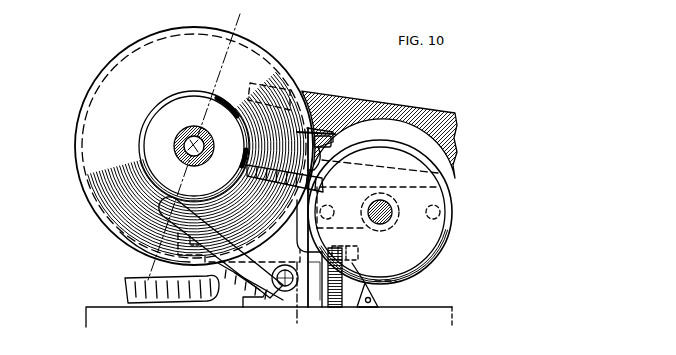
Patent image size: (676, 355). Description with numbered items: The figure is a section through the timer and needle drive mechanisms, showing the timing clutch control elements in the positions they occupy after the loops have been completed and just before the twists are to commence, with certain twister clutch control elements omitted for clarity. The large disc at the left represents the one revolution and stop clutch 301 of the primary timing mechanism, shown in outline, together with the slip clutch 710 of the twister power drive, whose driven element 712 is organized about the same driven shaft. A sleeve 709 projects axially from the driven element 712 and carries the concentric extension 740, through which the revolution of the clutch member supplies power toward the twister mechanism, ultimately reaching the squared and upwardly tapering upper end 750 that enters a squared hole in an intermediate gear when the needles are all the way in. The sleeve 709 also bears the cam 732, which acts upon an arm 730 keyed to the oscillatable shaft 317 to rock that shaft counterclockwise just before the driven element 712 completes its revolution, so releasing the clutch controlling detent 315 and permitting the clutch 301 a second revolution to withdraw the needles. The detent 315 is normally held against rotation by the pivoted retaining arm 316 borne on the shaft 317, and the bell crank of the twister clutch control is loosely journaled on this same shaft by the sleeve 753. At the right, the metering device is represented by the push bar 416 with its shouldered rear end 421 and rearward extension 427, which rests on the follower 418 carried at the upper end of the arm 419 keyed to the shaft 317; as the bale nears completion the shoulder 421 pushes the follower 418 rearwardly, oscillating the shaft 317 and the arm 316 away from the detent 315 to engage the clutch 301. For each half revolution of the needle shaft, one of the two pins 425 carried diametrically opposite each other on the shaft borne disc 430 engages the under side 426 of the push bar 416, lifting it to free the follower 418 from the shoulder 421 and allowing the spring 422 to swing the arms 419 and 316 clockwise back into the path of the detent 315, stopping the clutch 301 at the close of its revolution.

The one revolution and stop clutch 301 is at (118, 57).
The driven element of slip clutch 712 is at (84, 103).
The slip clutch 710 is at (180, 83).
The concentric extension 740 is at (174, 146).
The sleeve 709 is at (118, 192).
The squared and upwardly tapering upper end 750 is at (125, 213).
The cam 732 is at (133, 242).
The clutch controlling detent 315 is at (148, 262).
The arm 730 is at (237, 277).
The pivoted retaining arm 316 is at (247, 277).
The oscillatable shaft 317 is at (285, 291).
The sleeve 753 is at (300, 303).
The arm 419 is at (316, 275).
The spring 422 is at (354, 262).
The pins 425 is at (427, 205).
The under side of push bar 426 is at (453, 166).
The shaft borne disc 430 is at (448, 222).
The push bar 416 is at (428, 111).
The shoulder 421 is at (327, 135).
The follower 418 is at (315, 137).
The rearward extension 427 is at (305, 88).